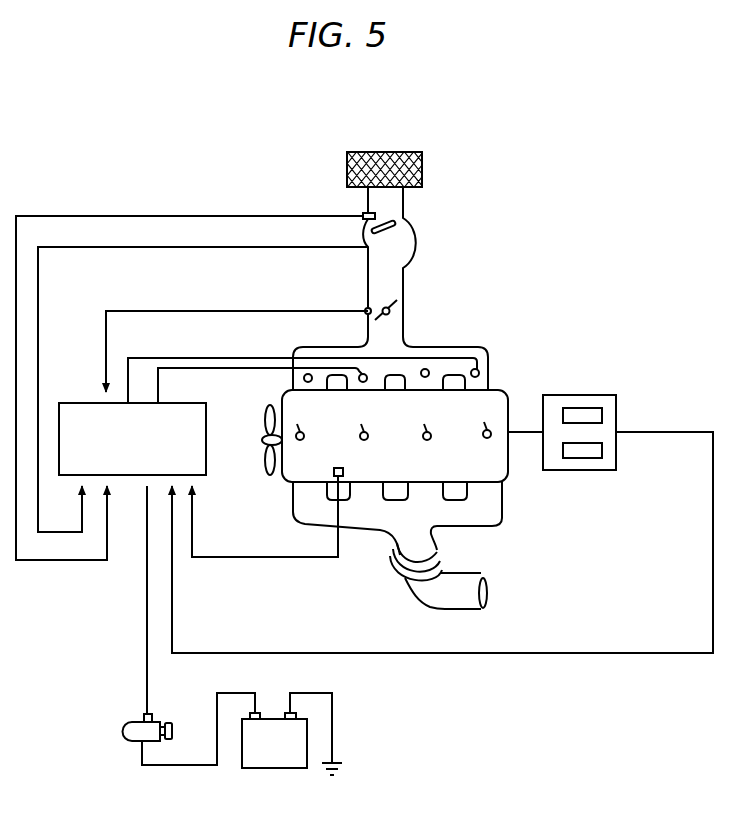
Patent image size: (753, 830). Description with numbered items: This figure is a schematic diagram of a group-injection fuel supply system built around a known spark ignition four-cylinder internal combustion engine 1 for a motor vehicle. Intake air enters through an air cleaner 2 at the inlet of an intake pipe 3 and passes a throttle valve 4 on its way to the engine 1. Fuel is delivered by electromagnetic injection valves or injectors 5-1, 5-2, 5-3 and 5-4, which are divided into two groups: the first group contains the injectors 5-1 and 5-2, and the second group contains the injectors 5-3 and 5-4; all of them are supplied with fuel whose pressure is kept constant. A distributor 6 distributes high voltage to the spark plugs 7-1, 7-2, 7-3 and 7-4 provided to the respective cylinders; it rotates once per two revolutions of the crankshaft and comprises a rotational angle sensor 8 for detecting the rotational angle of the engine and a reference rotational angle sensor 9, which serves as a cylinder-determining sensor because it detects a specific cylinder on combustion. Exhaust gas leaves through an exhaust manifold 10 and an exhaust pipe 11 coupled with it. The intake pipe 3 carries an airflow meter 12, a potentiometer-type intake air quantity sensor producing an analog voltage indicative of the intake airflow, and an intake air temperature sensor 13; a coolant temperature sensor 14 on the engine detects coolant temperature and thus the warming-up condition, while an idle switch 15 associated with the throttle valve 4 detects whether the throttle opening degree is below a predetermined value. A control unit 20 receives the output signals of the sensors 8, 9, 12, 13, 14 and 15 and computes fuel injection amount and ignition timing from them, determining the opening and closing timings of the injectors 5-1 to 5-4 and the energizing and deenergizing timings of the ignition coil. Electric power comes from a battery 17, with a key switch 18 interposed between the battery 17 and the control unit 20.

The engine 1 is at (474, 329).
The air cleaner 2 is at (423, 166).
The intake pipe 3 is at (418, 246).
The throttle valve 4 is at (392, 305).
The injector 5-1 is at (306, 374).
The injector 5-2 is at (361, 374).
The injector 5-3 is at (426, 369).
The injector 5-4 is at (479, 372).
The distributor 6 is at (582, 395).
The spark plug 7-1 is at (309, 422).
The spark plug 7-2 is at (367, 422).
The spark plug 7-3 is at (425, 422).
The spark plug 7-4 is at (479, 421).
The rotational angle sensor 8 is at (602, 415).
The reference rotational angle sensor 9 is at (597, 452).
The exhaust manifold 10 is at (503, 502).
The exhaust pipe 11 is at (466, 575).
The airflow meter 12 is at (390, 231).
The intake air temperature sensor 13 is at (363, 215).
The coolant temperature sensor 14 is at (343, 468).
The idle switch 15 is at (366, 308).
The battery 17 is at (268, 770).
The key switch 18 is at (131, 720).
The control unit 20 is at (80, 403).